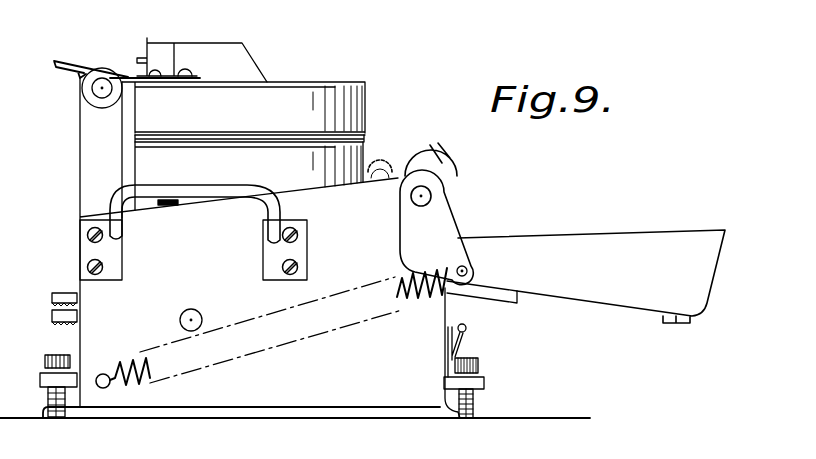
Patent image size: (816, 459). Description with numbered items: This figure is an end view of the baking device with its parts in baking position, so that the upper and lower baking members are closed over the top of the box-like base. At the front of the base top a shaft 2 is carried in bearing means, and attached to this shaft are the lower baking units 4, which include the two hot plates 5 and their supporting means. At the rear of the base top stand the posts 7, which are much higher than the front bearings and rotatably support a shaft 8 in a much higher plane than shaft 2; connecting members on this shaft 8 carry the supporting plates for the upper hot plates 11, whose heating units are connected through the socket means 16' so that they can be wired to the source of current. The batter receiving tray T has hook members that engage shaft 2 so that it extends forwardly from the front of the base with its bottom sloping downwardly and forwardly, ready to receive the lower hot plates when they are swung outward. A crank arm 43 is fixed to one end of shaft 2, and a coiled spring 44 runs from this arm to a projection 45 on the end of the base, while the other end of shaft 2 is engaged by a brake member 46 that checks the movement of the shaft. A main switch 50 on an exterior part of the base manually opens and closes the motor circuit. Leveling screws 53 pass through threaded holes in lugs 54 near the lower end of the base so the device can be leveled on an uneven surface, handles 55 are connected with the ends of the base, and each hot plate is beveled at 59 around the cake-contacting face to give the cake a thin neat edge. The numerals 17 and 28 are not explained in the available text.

The shaft 2 is at (432, 196).
The lower baking units 4 is at (245, 397).
The hot plates 5 is at (357, 153).
The posts 7 is at (82, 150).
The shaft 8 is at (96, 88).
The upper hot plates 11 is at (362, 110).
The socket means 16' is at (202, 51).
The arm 17 is at (68, 62).
The rod 28 is at (512, 298).
The crank arm 43 is at (438, 225).
The coiled spring 44 is at (420, 297).
The projection 45 is at (102, 376).
The brake member 46 is at (445, 168).
The main switch 50 is at (468, 335).
The leveling screws 53 is at (475, 402).
The lugs 54 is at (483, 380).
The handles 55 is at (225, 192).
The beveled periphery 59 is at (363, 138).
The batter receiving tray T is at (633, 297).